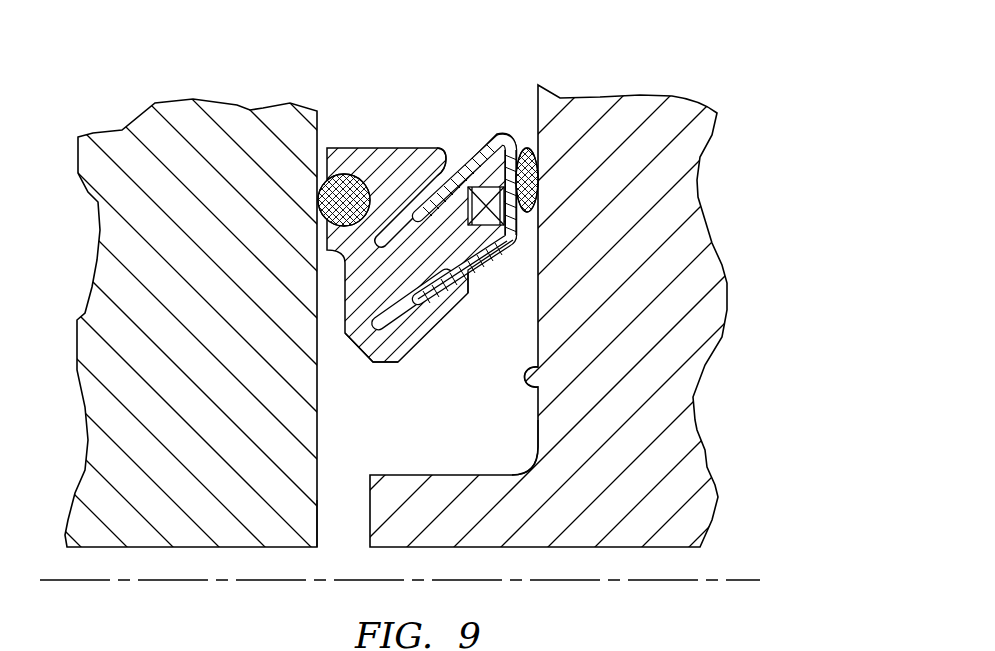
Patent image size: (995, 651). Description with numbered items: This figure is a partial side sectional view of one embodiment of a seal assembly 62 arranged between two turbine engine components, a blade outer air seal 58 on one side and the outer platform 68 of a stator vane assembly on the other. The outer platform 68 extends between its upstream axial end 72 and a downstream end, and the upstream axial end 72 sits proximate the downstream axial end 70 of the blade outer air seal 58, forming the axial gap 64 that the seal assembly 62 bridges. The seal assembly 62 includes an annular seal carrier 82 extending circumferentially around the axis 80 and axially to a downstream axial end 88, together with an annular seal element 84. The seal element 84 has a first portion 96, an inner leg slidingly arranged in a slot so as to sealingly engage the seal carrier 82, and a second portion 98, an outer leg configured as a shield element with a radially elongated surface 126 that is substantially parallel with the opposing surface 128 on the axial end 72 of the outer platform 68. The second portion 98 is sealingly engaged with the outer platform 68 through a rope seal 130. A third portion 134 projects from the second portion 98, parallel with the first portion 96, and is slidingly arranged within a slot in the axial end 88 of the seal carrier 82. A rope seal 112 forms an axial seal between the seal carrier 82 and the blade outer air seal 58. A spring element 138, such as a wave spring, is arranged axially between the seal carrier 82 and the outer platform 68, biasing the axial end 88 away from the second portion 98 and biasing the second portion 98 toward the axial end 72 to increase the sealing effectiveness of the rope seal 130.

The blade outer air seal 58 is at (203, 297).
The seal assembly 62 is at (431, 217).
The axial gap 64 is at (355, 116).
The outer platform 68 is at (678, 287).
The downstream axial end 70 is at (318, 500).
The upstream axial end 72 is at (540, 420).
The axis 80 is at (722, 578).
The seal carrier 82 is at (386, 365).
The seal element 84 is at (478, 250).
The downstream axial end 88 is at (470, 292).
The first portion 96 is at (433, 300).
The second portion 98 is at (513, 228).
The rope seal 112 is at (318, 192).
The elongated surface 126 is at (515, 142).
The opposing surface 128 is at (540, 383).
The rope seal 130 is at (538, 180).
The third portion 134 is at (432, 160).
The spring element 138 is at (490, 192).